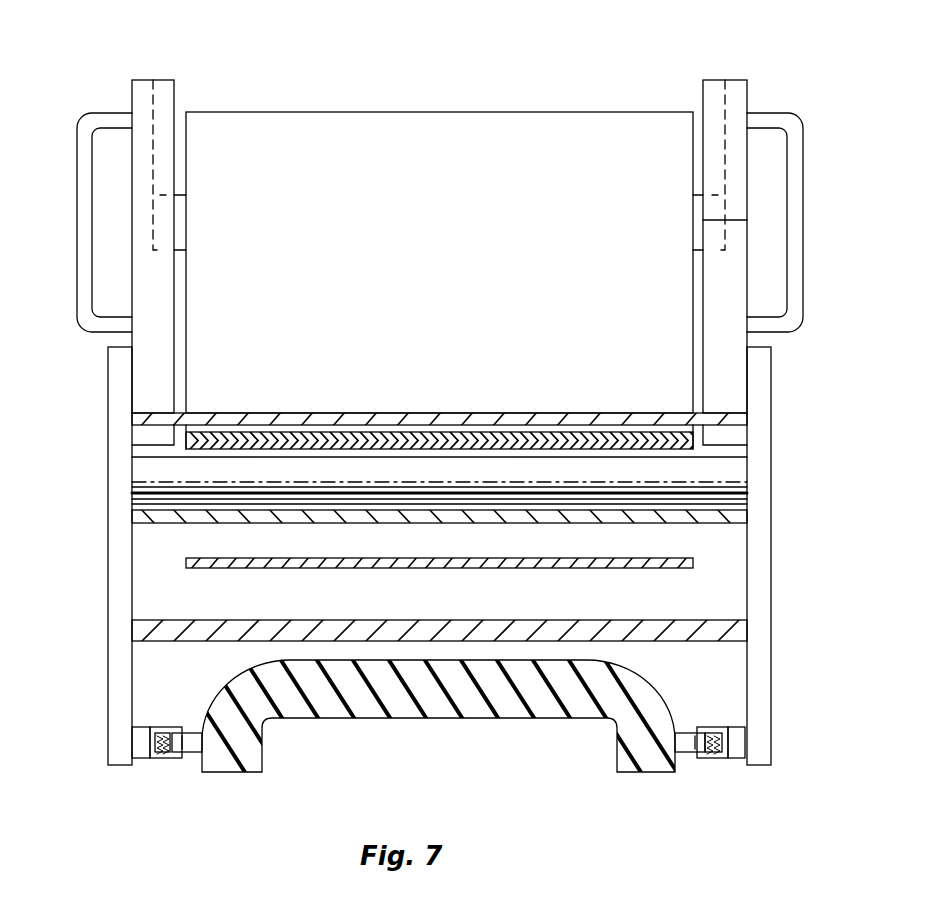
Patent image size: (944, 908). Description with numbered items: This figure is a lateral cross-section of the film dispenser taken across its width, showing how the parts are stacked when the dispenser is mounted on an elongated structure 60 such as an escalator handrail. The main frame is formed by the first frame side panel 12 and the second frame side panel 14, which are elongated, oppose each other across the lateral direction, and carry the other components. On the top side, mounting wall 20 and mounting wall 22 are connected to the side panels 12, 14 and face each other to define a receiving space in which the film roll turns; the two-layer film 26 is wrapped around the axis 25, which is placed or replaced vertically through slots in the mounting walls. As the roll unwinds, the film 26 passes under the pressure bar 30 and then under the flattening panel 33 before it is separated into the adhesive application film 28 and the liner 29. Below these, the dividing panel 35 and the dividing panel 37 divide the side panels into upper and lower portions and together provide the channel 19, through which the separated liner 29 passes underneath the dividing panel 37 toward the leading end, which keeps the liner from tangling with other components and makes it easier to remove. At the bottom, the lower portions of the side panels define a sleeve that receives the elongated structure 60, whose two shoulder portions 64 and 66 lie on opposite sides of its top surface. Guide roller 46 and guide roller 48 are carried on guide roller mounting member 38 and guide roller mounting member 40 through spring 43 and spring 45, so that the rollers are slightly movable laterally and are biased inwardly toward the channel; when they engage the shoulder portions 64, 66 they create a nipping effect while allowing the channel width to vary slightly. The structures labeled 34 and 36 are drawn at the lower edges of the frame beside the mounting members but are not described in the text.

The first frame side panel 12 is at (118, 372).
The second frame side panel 14 is at (763, 378).
The channel 19 is at (680, 545).
The mounting wall 20 is at (140, 80).
The mounting wall 22 is at (738, 80).
The axis 25 is at (712, 222).
The two-layer film 26 is at (427, 133).
The adhesive application film 28 is at (612, 437).
The liner 29 is at (474, 444).
The pressure bar 30 is at (738, 470).
The flattening panel 33 is at (138, 418).
The right bottom rail 34 is at (772, 727).
The dividing panel 35 is at (140, 630).
The left bottom rail 36 is at (108, 727).
The dividing panel 37 is at (138, 517).
The guide roller mounting member 38 is at (142, 760).
The guide roller mounting member 40 is at (737, 760).
The spring 43 is at (158, 727).
The spring 45 is at (718, 727).
The guide roller 46 is at (197, 733).
The guide roller 48 is at (680, 733).
The elongated structure 60 is at (407, 700).
The shoulder portion 64 is at (196, 760).
The shoulder portion 66 is at (680, 762).